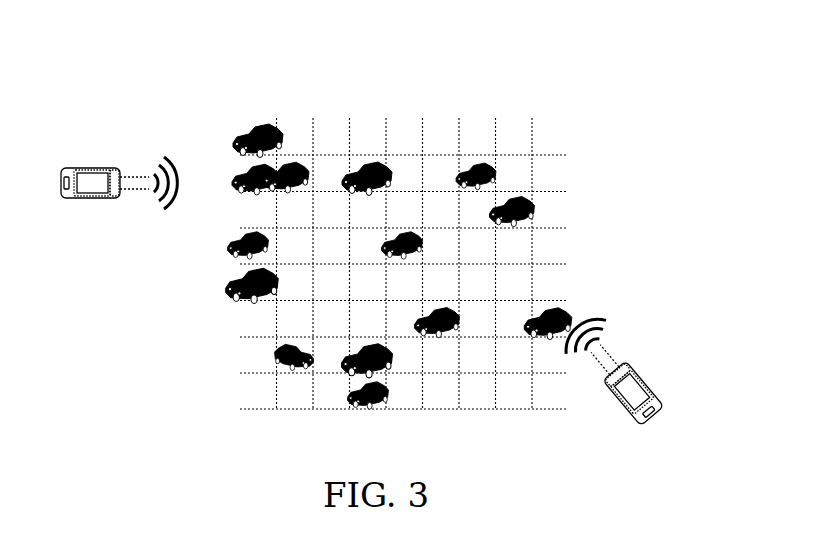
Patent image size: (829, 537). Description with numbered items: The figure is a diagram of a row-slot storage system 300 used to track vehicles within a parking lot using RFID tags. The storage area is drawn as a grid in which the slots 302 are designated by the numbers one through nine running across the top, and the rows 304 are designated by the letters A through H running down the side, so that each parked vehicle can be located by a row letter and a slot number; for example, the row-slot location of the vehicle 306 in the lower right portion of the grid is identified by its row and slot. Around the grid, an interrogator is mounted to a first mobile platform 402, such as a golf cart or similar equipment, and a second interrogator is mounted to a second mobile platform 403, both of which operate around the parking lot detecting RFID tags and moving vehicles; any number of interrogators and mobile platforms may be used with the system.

The row-slot storage system 300 is at (506, 47).
The slots 302 is at (240, 92).
The rows 304 is at (177, 138).
The vehicle 306 is at (566, 312).
The first mobile platform 402 is at (651, 383).
The second mobile platform 403 is at (105, 202).